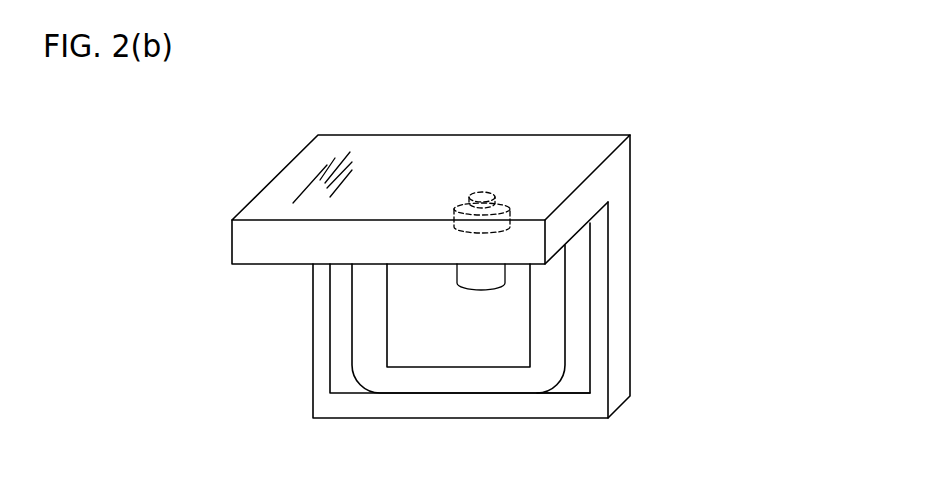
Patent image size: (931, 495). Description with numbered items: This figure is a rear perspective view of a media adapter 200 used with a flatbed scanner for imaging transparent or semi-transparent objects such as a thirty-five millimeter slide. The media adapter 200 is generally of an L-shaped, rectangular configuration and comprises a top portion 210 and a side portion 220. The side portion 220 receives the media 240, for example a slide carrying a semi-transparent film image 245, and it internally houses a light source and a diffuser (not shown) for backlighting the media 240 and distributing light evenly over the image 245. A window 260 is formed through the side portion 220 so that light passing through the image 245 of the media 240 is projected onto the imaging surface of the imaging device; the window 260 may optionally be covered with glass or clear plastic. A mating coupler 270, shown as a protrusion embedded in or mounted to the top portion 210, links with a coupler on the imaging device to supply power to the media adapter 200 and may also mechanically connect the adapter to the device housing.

The media adapter 200 is at (662, 115).
The top portion 210 is at (232, 252).
The side portion 220 is at (412, 419).
The media 240 is at (352, 345).
The film image 245 is at (445, 305).
The window 260 is at (567, 392).
The mating coupler 270 is at (498, 191).